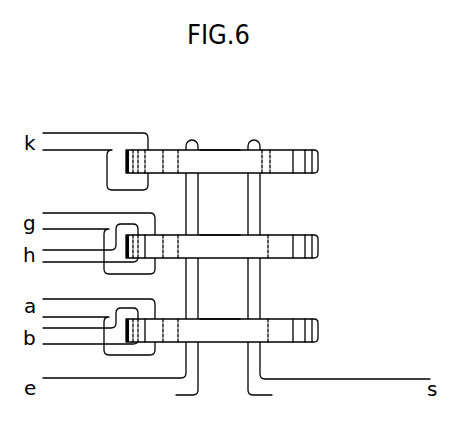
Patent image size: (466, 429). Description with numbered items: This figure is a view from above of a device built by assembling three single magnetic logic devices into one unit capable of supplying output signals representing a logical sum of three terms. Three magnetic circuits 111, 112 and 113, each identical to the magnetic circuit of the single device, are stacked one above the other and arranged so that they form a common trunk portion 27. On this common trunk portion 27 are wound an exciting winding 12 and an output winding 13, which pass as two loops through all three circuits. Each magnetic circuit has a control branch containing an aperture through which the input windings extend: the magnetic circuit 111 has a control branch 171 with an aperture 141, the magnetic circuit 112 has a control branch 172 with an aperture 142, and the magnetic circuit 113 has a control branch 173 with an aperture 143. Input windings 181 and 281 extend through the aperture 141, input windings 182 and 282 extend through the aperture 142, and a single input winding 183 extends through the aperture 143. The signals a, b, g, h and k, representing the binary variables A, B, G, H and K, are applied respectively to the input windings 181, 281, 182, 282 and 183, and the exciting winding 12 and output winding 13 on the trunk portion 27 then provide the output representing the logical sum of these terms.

The exciting winding 12 is at (175, 397).
The output winding 13 is at (273, 397).
The common trunk portion 27 is at (222, 150).
The magnetic circuit 111 is at (320, 331).
The magnetic circuit 112 is at (320, 247).
The magnetic circuit 113 is at (320, 161).
The aperture 141 is at (164, 343).
The aperture 142 is at (164, 259).
The aperture 143 is at (163, 152).
The control branch 171 is at (177, 318).
The control branch 172 is at (175, 234).
The control branch 173 is at (178, 155).
The input winding 181 is at (97, 299).
The input winding 182 is at (86, 213).
The input winding 183 is at (103, 133).
The input winding 281 is at (52, 344).
The input winding 282 is at (86, 250).